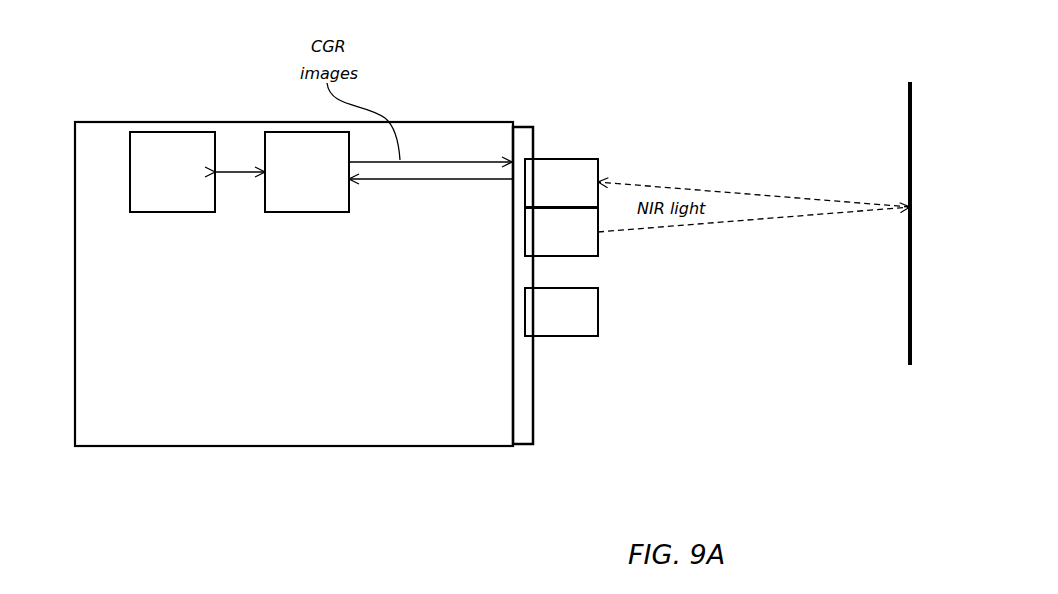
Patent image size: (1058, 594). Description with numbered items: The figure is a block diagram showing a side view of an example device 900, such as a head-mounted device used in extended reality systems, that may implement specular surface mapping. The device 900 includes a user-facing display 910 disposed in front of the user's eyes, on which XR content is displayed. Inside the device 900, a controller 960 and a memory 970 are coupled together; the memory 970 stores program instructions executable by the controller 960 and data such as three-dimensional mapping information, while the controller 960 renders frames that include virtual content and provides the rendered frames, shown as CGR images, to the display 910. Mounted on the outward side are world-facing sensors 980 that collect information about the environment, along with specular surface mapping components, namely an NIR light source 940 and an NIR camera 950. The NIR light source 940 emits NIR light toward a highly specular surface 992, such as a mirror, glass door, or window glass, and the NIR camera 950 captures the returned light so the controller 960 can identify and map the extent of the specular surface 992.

The device 900 is at (110, 97).
The user-facing display 910 is at (518, 448).
The NIR light source 940 is at (561, 232).
The NIR camera 950 is at (561, 183).
The controller 960 is at (307, 172).
The memory 970 is at (172, 172).
The world-facing sensors 980 is at (561, 312).
The specular surfaces 992 is at (910, 82).